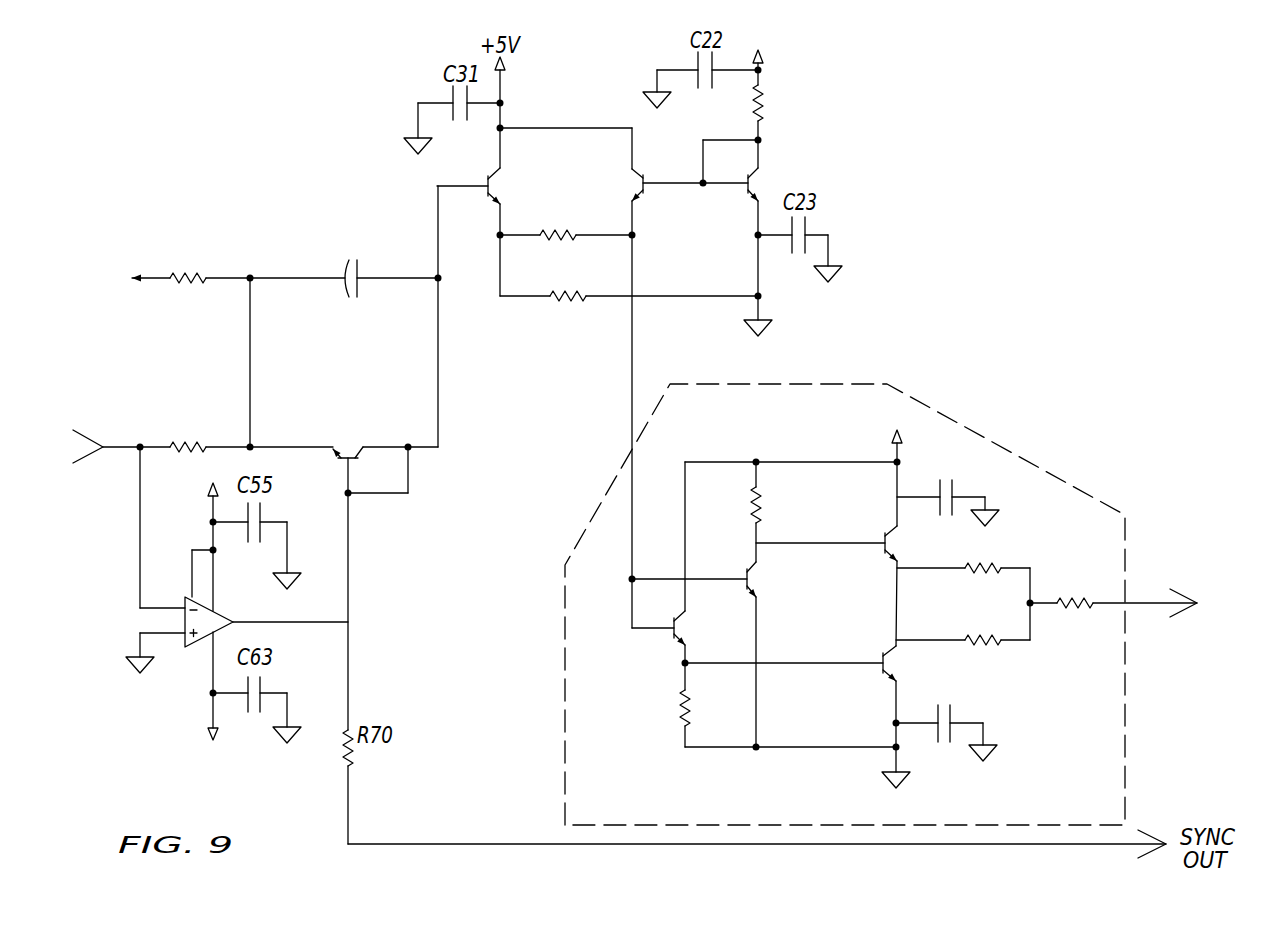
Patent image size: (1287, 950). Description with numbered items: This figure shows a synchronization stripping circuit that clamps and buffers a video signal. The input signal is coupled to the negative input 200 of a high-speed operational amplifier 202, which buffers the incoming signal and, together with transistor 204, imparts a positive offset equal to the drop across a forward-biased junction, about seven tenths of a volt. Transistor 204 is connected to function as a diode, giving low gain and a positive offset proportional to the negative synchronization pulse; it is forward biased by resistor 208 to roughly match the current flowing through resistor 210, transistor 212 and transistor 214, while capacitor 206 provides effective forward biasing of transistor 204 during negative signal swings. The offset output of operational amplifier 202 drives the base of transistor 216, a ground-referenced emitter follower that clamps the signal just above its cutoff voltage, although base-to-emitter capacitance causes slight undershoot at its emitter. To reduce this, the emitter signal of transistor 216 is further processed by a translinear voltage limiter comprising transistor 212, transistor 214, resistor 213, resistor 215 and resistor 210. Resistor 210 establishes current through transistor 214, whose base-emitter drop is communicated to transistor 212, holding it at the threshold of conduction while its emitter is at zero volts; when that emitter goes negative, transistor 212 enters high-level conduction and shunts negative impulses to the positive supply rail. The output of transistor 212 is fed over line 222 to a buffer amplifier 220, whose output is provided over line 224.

The negative input 200 is at (127, 560).
The operational amplifier 202 is at (193, 648).
The transistor 204 is at (352, 433).
The capacitor 206 is at (368, 260).
The resistor 208 is at (200, 257).
The resistor 210 is at (773, 80).
The transistor 212 is at (627, 183).
The resistor 213 is at (573, 240).
The transistor 214 is at (763, 175).
The resistor 215 is at (553, 305).
The transistor 216 is at (508, 185).
The buffer amplifier 220 is at (793, 358).
The line 222 is at (613, 415).
The line 224 is at (1147, 620).